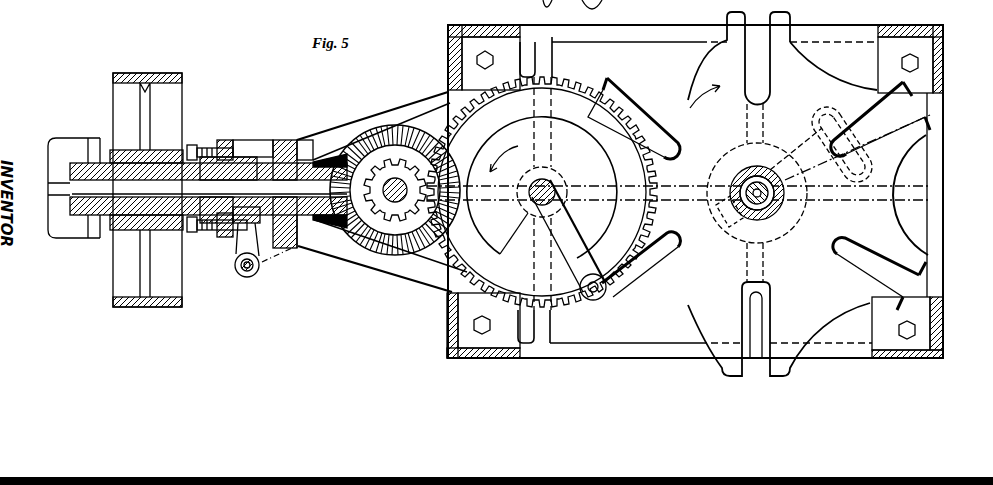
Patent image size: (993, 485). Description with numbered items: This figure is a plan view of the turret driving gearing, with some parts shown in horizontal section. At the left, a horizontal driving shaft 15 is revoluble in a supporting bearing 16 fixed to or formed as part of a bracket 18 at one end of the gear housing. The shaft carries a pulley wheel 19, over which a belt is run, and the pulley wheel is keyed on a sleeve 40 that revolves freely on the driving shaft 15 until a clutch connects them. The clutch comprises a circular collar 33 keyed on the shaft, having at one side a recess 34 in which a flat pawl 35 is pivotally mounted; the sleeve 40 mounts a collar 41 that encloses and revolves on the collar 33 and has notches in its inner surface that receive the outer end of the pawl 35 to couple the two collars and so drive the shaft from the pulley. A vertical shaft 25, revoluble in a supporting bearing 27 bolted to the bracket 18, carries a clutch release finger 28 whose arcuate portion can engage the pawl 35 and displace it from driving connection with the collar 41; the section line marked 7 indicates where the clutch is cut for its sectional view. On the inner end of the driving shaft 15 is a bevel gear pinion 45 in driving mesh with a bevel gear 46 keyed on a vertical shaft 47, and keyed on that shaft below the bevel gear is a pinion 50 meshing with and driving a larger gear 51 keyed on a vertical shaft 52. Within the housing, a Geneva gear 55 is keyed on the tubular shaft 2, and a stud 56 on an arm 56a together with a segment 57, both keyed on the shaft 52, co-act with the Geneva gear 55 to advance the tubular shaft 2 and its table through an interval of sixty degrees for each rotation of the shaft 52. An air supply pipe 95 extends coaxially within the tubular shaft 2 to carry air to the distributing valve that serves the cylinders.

The tubular shaft 2 is at (770, 237).
The section line 7- 7 is at (215, 330).
The driving shaft 15 is at (292, 150).
The supporting bearing 16 is at (82, 217).
The bracket 18 is at (290, 250).
The pulley wheel 19 is at (120, 298).
The vertical shaft 25 is at (240, 277).
The supporting bearing 27 is at (277, 253).
The clutch release finger 28 is at (238, 240).
The circular collar 33 is at (268, 183).
The recess 34 is at (190, 228).
The flat pawl 35 is at (197, 245).
The sleeve 40 is at (113, 226).
The collar 41 is at (230, 140).
The bevel gear pinion 45 is at (330, 220).
The bevel gear 46 is at (400, 262).
The vertical shaft 47 is at (388, 255).
The pinion 50 is at (378, 125).
The gear 51 is at (457, 273).
The vertical shaft 52 is at (557, 180).
The Geneva gear 55 is at (883, 228).
The stud 56 is at (597, 297).
The arm 56a is at (585, 242).
The segment 57 is at (570, 133).
The air supply pipe 95 is at (780, 212).